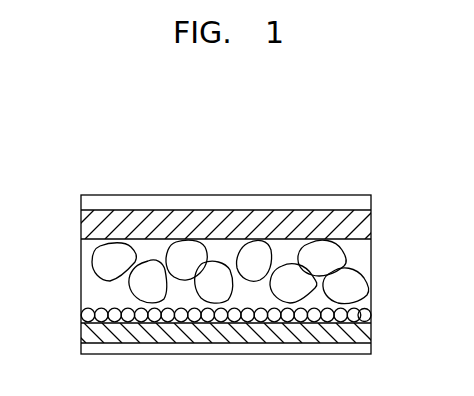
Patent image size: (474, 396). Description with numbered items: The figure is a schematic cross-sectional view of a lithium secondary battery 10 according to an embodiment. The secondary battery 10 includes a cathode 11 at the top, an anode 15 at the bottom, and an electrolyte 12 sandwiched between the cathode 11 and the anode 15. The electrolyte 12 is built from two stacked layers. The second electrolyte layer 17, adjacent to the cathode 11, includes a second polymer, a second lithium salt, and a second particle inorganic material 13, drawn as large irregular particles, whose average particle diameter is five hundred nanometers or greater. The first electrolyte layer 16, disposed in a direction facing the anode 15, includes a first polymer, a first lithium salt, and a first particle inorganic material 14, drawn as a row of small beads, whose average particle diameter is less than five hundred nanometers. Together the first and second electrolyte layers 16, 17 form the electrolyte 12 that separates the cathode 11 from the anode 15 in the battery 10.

The secondary battery 10 is at (392, 167).
The cathode 11 is at (374, 196).
The electrolyte 12 is at (236, 283).
The second particle inorganic material 13 is at (92, 262).
The first particle inorganic material 14 is at (88, 314).
The anode 15 is at (374, 325).
The first electrolyte layer 16 is at (219, 314).
The second electrolyte layer 17 is at (219, 273).